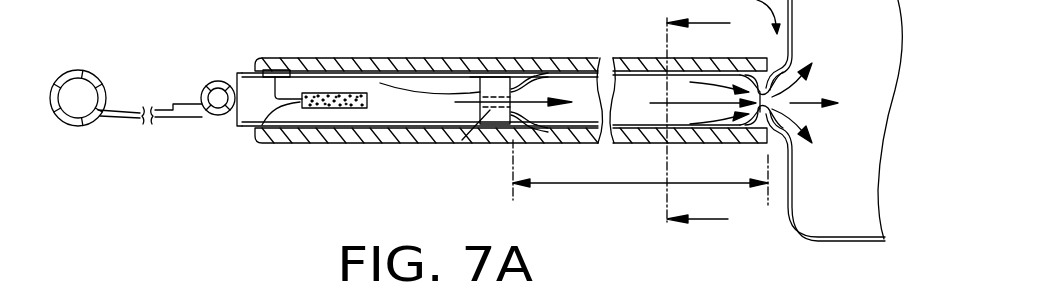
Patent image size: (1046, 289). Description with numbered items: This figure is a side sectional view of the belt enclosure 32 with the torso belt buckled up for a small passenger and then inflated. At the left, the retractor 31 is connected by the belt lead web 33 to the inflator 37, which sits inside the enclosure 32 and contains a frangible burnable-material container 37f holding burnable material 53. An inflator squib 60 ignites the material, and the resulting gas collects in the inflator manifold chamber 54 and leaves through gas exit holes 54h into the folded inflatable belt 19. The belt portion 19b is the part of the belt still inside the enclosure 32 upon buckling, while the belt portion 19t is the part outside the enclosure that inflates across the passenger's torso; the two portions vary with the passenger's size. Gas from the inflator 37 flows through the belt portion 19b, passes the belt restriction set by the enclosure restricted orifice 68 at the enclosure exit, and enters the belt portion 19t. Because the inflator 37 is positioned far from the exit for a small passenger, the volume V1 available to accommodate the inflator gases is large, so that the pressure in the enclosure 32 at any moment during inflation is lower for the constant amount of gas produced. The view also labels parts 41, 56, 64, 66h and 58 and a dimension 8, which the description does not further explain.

The retractor 31 is at (92, 72).
The belt lead web 33 is at (160, 122).
The end cap with attachment ring 41 is at (252, 72).
The inflator squib 60 is at (277, 70).
The lead wire 56 is at (382, 83).
The inflator 37 is at (406, 58).
The hole in inner tube 66h is at (478, 86).
The enclosure 32 is at (528, 63).
The inflatable belt 19 is at (547, 73).
The belt portion in enclosure 19b is at (525, 128).
The lead wire 64 is at (262, 125).
The frangible burnable-material container 37f is at (318, 108).
The burnable material 53 is at (352, 108).
The gas exit holes 54h is at (462, 140).
The inflator manifold chamber 54 is at (502, 124).
The enclosure restricted orifice 68 is at (766, 68).
The lower nozzle lip 58 is at (758, 130).
The belt portion outside enclosure 19t is at (878, 68).
The dimension 8 is at (717, 120).
The volume V1 is at (614, 185).